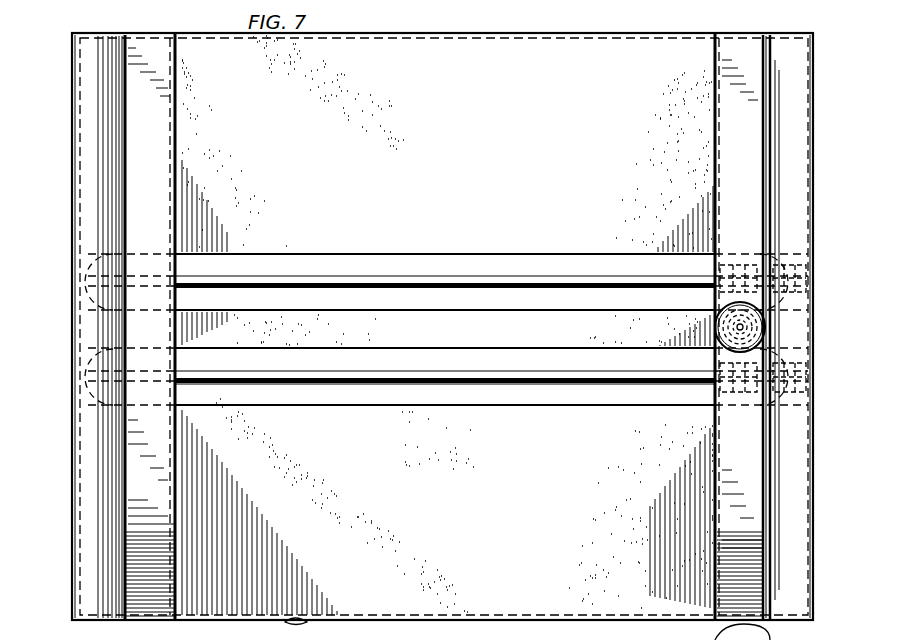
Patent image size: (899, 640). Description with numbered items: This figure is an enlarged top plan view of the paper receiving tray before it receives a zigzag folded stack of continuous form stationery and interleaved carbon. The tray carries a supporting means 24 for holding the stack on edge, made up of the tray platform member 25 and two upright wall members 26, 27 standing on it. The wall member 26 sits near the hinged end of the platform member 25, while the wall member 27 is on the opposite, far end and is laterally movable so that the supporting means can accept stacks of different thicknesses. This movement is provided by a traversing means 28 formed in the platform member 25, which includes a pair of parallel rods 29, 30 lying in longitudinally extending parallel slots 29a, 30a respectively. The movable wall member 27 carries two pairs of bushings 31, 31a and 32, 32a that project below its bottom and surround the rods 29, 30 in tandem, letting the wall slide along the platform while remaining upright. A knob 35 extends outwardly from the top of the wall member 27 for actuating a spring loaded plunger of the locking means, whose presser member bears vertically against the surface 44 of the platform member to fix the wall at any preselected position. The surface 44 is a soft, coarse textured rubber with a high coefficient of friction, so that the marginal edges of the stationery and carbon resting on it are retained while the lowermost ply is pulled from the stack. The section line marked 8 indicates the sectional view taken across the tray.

The section line 8- 8 is at (53, 420).
The supporting means 24 is at (640, 33).
The tray platform member 25 is at (536, 22).
The upright wall member 26 is at (176, 153).
The upright wall member 27 is at (715, 72).
The traversing means 28 is at (672, 386).
The rod 29 is at (533, 275).
The slot 29a is at (388, 260).
The rod 30 is at (556, 384).
The slot 30a is at (384, 404).
The bushing 31 is at (736, 264).
The bushing 31a is at (783, 264).
The bushing 32 is at (736, 392).
The bushing 32a is at (786, 392).
The knob 35 is at (715, 326).
The rubber surface 44 is at (444, 326).